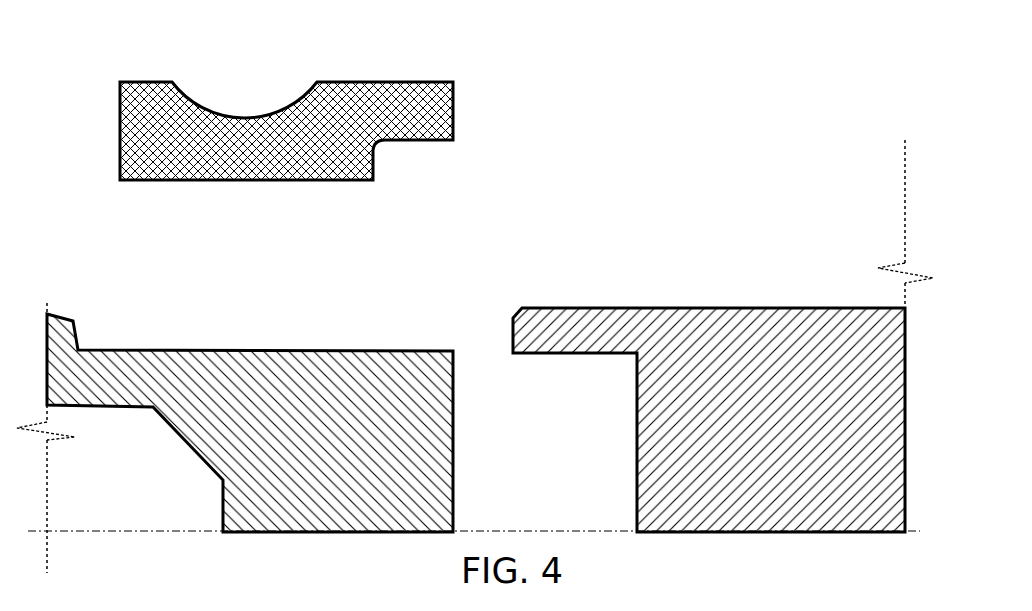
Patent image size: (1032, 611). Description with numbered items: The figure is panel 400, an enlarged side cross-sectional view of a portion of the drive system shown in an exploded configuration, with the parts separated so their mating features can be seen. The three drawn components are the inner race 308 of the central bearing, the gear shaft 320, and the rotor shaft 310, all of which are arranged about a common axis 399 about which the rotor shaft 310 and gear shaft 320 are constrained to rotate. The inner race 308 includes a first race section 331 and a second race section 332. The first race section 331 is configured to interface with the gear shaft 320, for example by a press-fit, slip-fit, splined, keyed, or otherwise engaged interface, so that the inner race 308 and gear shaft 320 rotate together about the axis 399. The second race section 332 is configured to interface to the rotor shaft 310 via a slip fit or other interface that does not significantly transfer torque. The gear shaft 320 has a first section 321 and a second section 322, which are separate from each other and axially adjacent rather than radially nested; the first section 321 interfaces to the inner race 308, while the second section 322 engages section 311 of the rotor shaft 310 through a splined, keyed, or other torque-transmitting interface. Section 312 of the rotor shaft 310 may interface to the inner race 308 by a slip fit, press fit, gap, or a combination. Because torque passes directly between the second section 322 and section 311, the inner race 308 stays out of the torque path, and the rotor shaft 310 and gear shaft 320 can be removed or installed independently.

The panel 400 is at (488, 60).
The inner race 308 is at (137, 141).
The first race section 331 is at (367, 197).
The second race section 332 is at (455, 197).
The gear shaft 320 is at (348, 461).
The first section 321 is at (365, 345).
The second section 322 is at (452, 345).
The rotor shaft 310 is at (760, 446).
The section of rotor shaft 311 is at (636, 365).
The section of rotor shaft 312 is at (600, 282).
The axis 399 is at (579, 530).